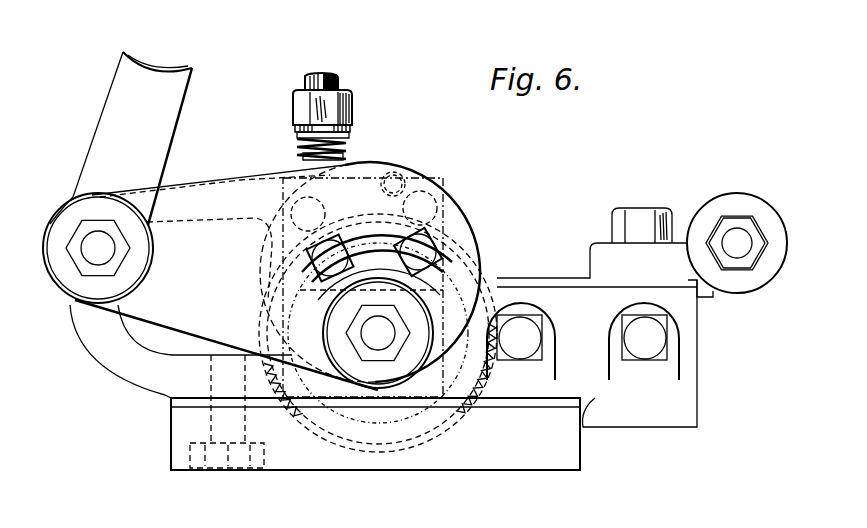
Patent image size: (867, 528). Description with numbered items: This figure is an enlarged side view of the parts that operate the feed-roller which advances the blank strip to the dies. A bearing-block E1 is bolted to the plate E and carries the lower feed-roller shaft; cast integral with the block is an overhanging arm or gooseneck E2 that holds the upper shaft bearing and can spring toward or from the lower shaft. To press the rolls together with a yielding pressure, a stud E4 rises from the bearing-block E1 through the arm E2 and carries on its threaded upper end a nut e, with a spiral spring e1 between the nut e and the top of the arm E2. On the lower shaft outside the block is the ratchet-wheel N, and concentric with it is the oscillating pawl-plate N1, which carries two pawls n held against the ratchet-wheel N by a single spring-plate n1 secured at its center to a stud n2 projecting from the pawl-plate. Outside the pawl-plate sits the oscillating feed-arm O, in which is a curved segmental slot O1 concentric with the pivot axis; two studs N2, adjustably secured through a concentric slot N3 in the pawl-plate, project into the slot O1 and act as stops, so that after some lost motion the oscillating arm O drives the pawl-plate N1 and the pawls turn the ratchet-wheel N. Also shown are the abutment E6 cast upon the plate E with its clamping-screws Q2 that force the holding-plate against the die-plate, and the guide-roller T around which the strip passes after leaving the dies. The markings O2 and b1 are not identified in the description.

The lever arm O2 is at (121, 138).
The oscillating feed-arm O is at (210, 281).
The segmental slot O1 is at (460, 248).
The oscillating pawl-plate N1 is at (480, 225).
The ratchet-wheel N is at (482, 375).
The overhanging arm or gooseneck E2 is at (405, 205).
The concentric slot N3 is at (367, 259).
The stud N2 is at (418, 252).
The pins b1 is at (380, 284).
The pawl n is at (364, 211).
The spring-plate n1 is at (398, 175).
The stud n2 is at (405, 185).
The stud E4 is at (332, 76).
The nut e is at (352, 107).
The spiral spring e1 is at (340, 140).
The clamping-screw Q2 is at (583, 341).
The abutment E6 is at (605, 317).
The guide-roller T is at (738, 205).
The plate E is at (375, 434).
The bearing-block E1 is at (278, 372).